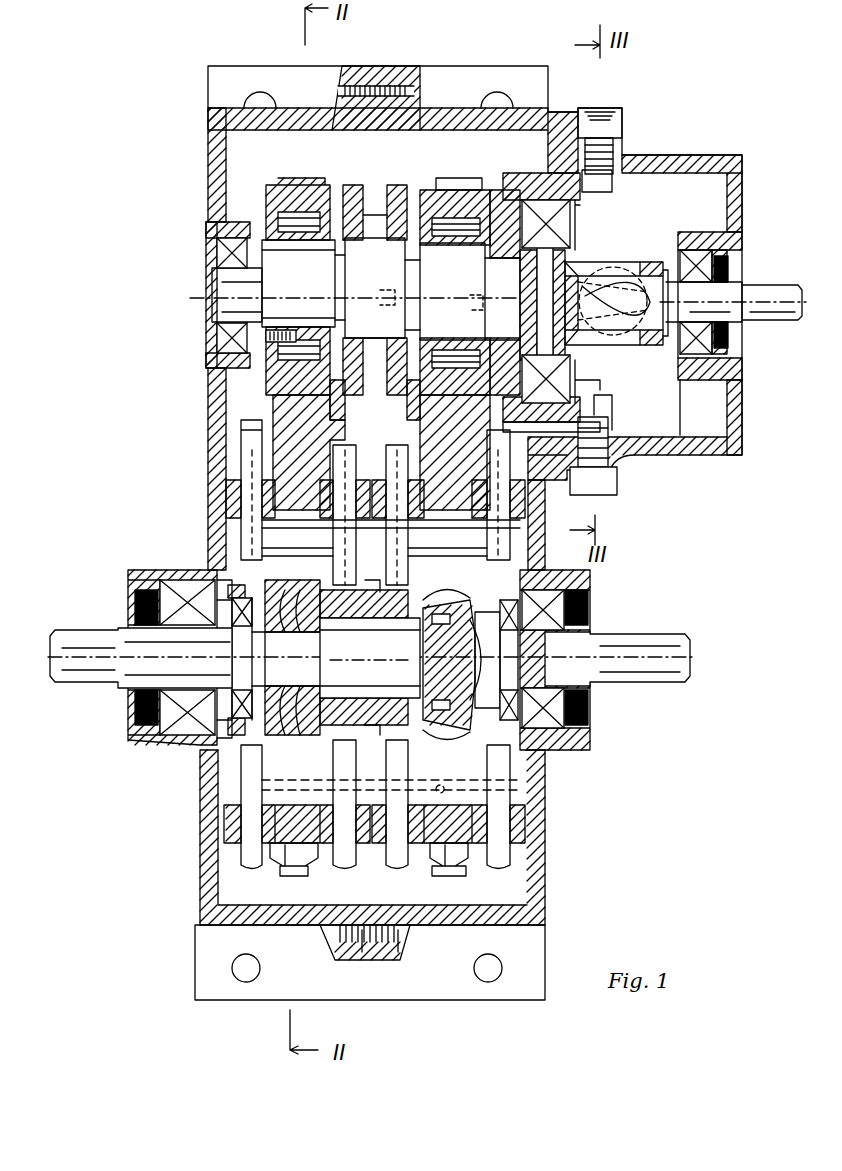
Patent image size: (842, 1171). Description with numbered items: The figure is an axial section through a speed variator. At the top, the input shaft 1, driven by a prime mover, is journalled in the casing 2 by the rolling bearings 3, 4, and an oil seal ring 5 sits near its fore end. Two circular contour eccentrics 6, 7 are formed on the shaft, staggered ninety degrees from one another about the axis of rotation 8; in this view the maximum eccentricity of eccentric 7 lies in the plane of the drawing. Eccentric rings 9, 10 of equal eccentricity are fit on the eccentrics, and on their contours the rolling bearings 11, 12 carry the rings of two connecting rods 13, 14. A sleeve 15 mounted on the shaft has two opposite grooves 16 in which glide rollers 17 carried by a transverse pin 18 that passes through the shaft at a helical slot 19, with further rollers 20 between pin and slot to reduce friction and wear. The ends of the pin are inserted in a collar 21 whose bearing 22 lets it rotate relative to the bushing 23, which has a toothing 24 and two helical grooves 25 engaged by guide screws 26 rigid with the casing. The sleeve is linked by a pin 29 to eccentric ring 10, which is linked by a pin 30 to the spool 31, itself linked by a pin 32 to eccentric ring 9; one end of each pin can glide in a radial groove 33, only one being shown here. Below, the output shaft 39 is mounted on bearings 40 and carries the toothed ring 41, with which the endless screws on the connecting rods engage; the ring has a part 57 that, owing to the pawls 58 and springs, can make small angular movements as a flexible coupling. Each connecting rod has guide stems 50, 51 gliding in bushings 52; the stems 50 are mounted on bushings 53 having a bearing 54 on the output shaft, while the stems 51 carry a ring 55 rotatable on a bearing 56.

The input shaft 1 is at (776, 308).
The casing 2 is at (255, 112).
The rolling bearing 3 is at (702, 238).
The rolling bearing 4 is at (232, 256).
The oil seal ring 5 is at (728, 268).
The eccentric 6 is at (242, 280).
The eccentric 7 is at (432, 240).
The axis of rotation 8 is at (240, 300).
The eccentric ring 9 is at (272, 342).
The eccentric ring 10 is at (460, 210).
The rolling bearing 11 is at (278, 222).
The rolling bearing 12 is at (440, 200).
The connecting rod 13 is at (290, 452).
The connecting rod 14 is at (424, 432).
The sleeve 15 is at (700, 340).
The grooves 16 is at (612, 270).
The rollers 17 is at (568, 270).
The transverse pin 18 is at (602, 150).
The helical slot 19 is at (628, 318).
The rollers 20 is at (598, 290).
The collar 21 is at (520, 255).
The bearing 22 is at (720, 432).
The bushing 23 is at (548, 150).
The toothing 24 is at (530, 228).
The helical grooves 25 is at (598, 428).
The guide screws 26 is at (606, 178).
The pin 29 is at (468, 298).
The pin 30 is at (390, 290).
The spool 31 is at (356, 190).
The pin 32 is at (285, 420).
The radial grooves 33 is at (326, 300).
The output shaft 39 is at (162, 655).
The bearings 40 is at (200, 722).
The toothed ring 41 is at (290, 722).
The guide stems 50 is at (252, 522).
The guide stems 51 is at (398, 950).
The bushings 52 is at (232, 500).
The bushings 53 is at (208, 592).
The bearing 54 is at (145, 603).
The ring 55 is at (330, 600).
The bearing 56 is at (370, 657).
The part 57 is at (475, 706).
The pawls 58 is at (440, 612).